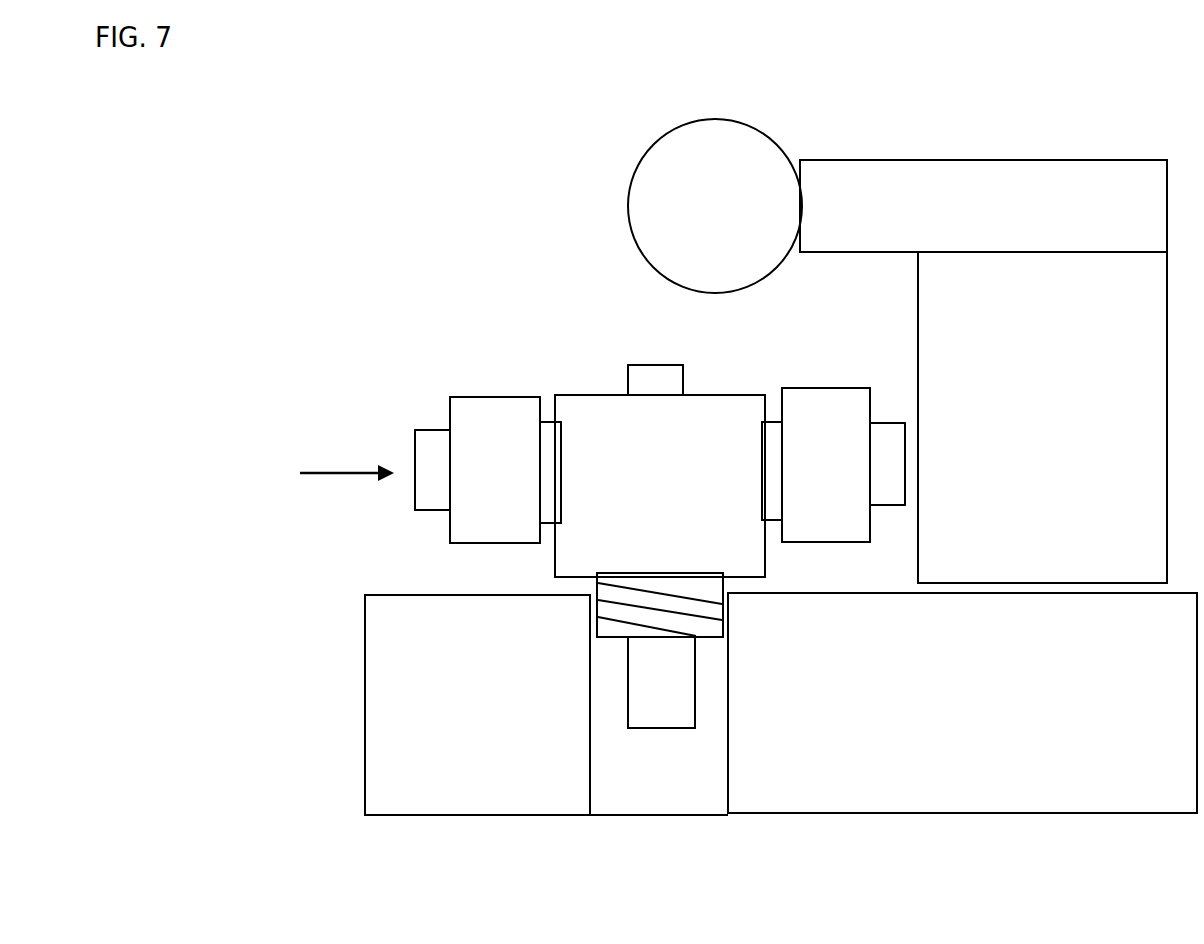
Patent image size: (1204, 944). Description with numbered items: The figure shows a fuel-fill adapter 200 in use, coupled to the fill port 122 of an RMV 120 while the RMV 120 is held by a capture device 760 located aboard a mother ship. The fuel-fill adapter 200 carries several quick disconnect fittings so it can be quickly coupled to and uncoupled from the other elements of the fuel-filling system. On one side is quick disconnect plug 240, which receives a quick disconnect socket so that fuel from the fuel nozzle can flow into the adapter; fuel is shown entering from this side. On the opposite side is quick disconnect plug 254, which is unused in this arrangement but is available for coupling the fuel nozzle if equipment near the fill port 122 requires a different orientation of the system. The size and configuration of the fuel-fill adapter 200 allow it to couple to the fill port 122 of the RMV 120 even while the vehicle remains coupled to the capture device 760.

The fuel-fill adapter 200 is at (424, 271).
The quick disconnect plug 240 is at (515, 480).
The quick disconnect plug 254 is at (849, 481).
The capture device 760 is at (1052, 357).
The RMV 120 is at (988, 724).
The fill port 122 is at (566, 587).